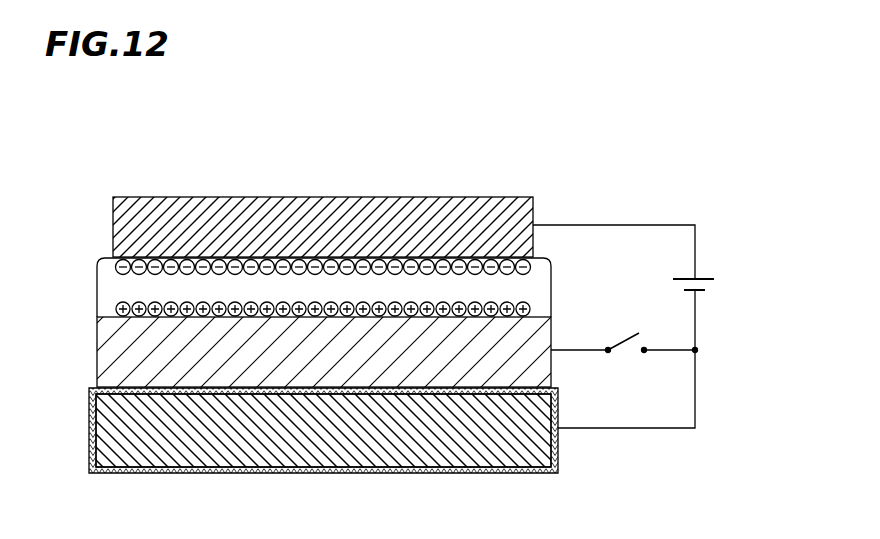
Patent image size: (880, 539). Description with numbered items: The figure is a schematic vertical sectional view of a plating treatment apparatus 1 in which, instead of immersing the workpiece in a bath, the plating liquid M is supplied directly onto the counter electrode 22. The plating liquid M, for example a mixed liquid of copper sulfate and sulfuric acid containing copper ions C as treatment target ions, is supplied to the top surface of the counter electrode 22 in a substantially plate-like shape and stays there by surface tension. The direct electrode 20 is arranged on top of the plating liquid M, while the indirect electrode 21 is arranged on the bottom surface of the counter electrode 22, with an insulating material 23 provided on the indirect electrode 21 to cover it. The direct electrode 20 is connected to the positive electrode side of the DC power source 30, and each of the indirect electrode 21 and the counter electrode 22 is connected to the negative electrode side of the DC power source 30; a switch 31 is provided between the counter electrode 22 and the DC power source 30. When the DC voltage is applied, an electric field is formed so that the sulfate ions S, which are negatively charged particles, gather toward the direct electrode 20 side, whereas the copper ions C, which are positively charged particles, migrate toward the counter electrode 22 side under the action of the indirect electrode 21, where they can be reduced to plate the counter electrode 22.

The plating treatment apparatus 1 is at (325, 143).
The direct electrode 20 is at (469, 210).
The plating liquid M is at (553, 271).
The sulfate ions S is at (108, 270).
The copper ions C is at (110, 312).
The counter electrode 22 is at (108, 350).
The indirect electrode 21 is at (340, 454).
The insulating material 23 is at (422, 472).
The DC power source 30 is at (703, 280).
The switch 31 is at (620, 337).